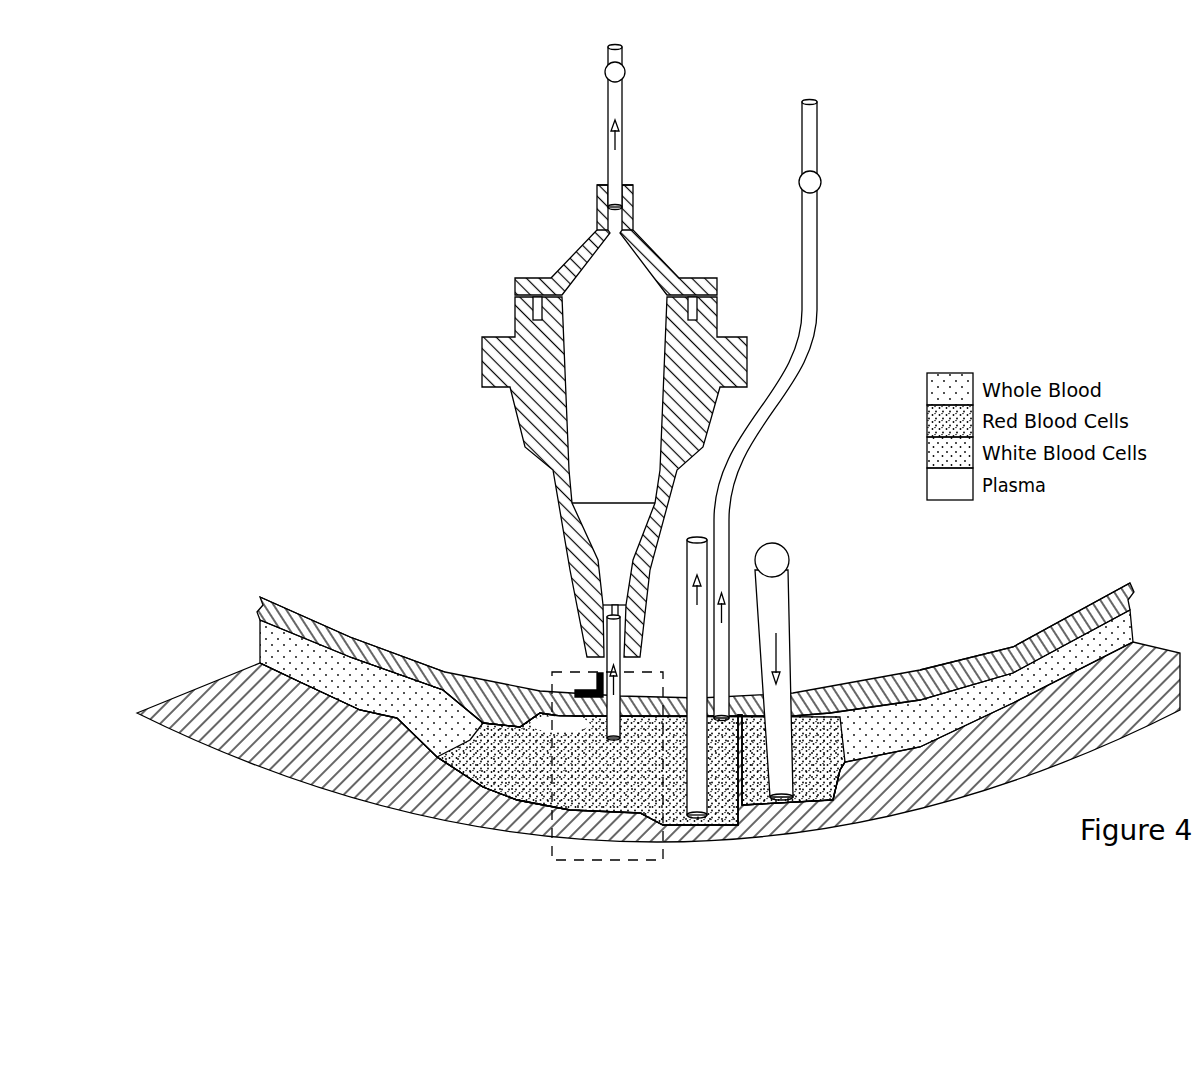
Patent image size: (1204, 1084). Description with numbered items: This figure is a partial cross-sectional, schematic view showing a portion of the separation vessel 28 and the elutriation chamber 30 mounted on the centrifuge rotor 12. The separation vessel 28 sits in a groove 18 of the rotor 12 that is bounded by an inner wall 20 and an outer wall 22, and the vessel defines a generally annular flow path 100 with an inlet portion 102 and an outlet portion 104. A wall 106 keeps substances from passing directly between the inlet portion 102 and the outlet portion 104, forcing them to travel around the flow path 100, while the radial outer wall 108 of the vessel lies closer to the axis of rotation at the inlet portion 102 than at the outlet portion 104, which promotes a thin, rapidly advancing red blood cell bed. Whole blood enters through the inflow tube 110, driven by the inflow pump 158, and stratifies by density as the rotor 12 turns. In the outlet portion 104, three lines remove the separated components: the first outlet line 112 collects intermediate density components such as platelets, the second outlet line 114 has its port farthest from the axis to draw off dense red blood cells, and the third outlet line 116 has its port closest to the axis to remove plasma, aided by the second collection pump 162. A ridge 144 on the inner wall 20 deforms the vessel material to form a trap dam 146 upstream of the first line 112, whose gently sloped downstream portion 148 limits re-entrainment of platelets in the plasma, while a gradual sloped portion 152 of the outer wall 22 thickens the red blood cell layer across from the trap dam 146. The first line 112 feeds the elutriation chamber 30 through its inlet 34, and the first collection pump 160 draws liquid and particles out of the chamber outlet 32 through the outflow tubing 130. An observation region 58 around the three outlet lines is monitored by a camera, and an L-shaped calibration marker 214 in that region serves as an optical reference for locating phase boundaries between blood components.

The rotor 12 is at (230, 758).
The groove 18 is at (250, 636).
The inner wall 20 is at (350, 655).
The outer wall 22 is at (360, 712).
The separation vessel 28 is at (949, 687).
The elutriation chamber 30 is at (614, 421).
The elutriation chamber outlet 32 is at (597, 201).
The elutriation chamber inlet 34 is at (587, 632).
The observation region 58 is at (617, 850).
The flow path 100 is at (305, 652).
The inlet portion 102 is at (808, 783).
The outlet portion 104 is at (503, 787).
The wall 106 is at (745, 805).
The radial outer wall 108 is at (507, 795).
The inflow tube 110 is at (795, 673).
The first outlet line 112 is at (620, 687).
The second outlet line 114 is at (687, 592).
The third outlet line 116 is at (818, 333).
The outflow tubing 130 is at (607, 160).
The ridge 144 is at (443, 691).
The trap dam 146 is at (487, 710).
The downstream portion 148 is at (527, 697).
The gradual sloped portion 152 is at (437, 760).
The inflow pump 158 is at (782, 543).
The first collection pump 160 is at (604, 70).
The second collection pump 162 is at (822, 180).
The L-shaped calibration marker 214 is at (583, 690).